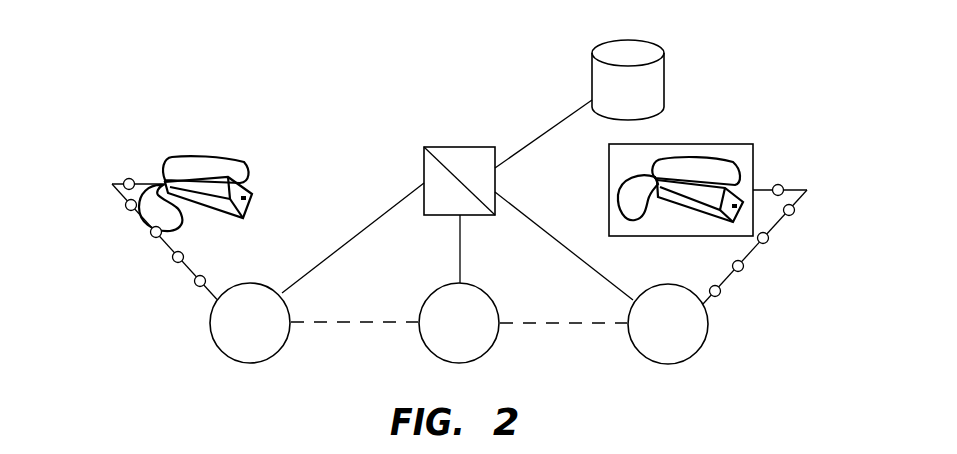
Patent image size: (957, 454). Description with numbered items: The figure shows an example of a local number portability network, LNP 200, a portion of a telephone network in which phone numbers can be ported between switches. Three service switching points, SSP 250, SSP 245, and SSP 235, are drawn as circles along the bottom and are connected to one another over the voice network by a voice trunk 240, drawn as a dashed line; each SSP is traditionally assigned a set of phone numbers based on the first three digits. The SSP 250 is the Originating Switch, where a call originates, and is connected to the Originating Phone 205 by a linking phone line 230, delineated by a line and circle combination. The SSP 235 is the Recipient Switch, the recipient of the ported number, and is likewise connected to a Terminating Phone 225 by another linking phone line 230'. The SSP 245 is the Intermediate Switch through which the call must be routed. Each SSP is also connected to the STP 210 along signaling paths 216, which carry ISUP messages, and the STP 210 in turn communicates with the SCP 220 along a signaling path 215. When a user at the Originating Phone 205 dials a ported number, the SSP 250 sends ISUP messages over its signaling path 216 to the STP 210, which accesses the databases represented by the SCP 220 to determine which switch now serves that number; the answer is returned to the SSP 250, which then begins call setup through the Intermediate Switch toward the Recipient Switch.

The local number portability (LNP) network 200 is at (94, 31).
The Originating Phone 205 is at (213, 157).
The STP 210 is at (446, 147).
The signaling path 215 is at (553, 127).
The signaling paths 216 is at (458, 247).
The SCP 220 is at (665, 77).
The Terminating Phone 225 is at (742, 145).
The linking phone line 230 is at (155, 239).
The linking phone line 230' is at (781, 245).
The SSP (Recipient Switch) 235 is at (678, 365).
The voice trunk 240 is at (537, 325).
The SSP (Intermediate Switch) 245 is at (470, 363).
The SSP (Originating Switch) 250 is at (238, 360).